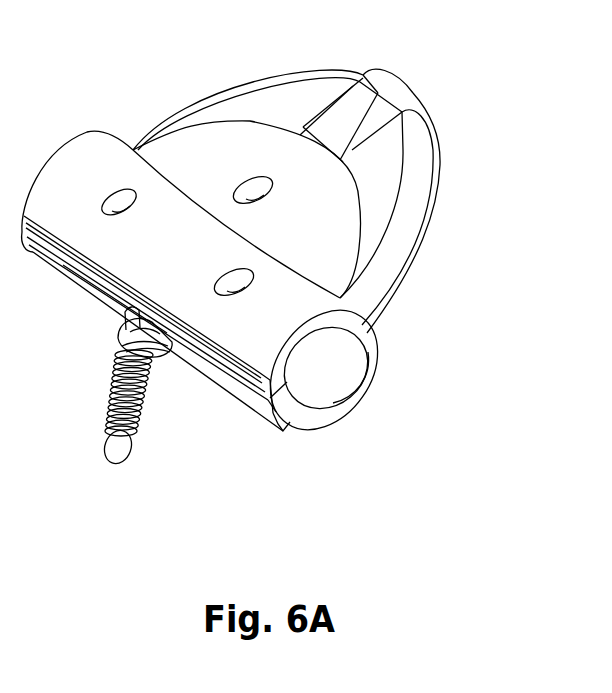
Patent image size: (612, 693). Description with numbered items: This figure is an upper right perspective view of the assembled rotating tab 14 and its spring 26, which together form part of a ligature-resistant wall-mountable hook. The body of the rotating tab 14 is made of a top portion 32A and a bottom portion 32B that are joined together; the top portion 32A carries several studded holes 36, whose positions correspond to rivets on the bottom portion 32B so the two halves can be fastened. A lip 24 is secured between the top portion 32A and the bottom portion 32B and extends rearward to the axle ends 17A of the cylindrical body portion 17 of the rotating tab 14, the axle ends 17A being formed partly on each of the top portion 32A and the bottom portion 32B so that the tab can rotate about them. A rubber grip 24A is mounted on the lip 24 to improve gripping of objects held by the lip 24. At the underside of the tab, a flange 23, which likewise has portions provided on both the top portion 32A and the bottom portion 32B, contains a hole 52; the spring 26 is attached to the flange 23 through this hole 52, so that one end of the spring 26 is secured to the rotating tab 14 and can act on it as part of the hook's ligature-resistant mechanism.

The rotating tab 14 is at (463, 125).
The cylindrical body portion 17 is at (248, 383).
The axle ends 17A is at (317, 397).
The flange 23 is at (126, 320).
The lip 24 is at (417, 202).
The rubber grip 24A is at (403, 90).
The spring 26 is at (150, 388).
The top portion 32A is at (198, 150).
The bottom portion 32B is at (288, 430).
The studded holes 36 is at (117, 205).
The hole 52 is at (127, 338).